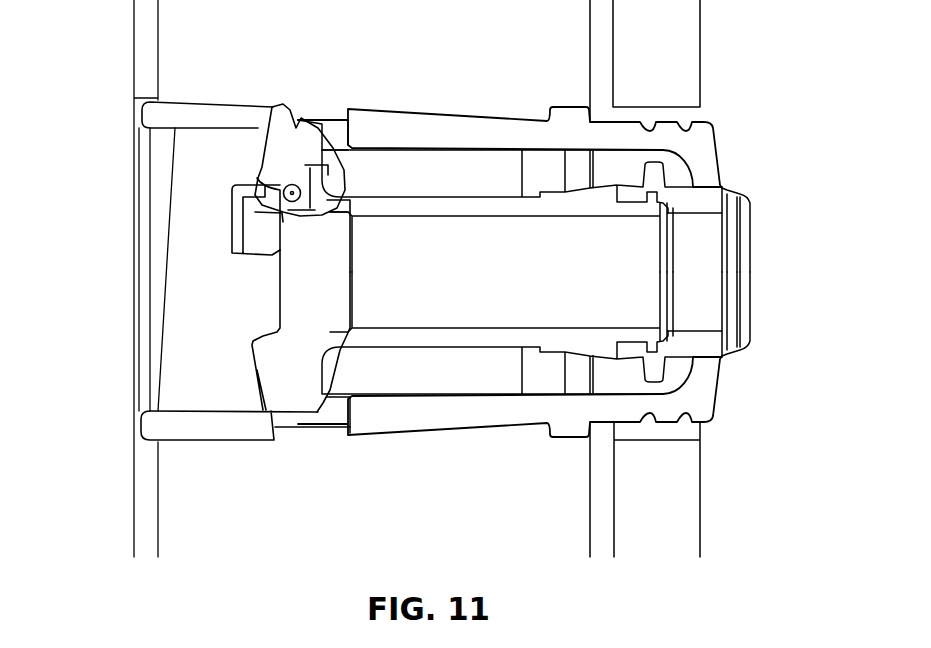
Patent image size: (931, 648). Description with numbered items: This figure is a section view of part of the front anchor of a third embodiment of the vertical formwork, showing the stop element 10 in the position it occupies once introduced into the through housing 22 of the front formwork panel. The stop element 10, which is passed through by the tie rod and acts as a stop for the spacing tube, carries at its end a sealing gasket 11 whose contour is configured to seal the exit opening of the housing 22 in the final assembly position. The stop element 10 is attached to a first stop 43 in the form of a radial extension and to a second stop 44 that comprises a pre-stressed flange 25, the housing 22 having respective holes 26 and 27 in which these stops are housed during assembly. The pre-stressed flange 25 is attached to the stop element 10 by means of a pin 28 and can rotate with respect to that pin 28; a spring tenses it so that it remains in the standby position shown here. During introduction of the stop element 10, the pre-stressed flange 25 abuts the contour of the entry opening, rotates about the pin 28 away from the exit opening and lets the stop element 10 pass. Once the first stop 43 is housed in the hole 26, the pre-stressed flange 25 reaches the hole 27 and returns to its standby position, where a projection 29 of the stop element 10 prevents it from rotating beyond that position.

The stop element 10 is at (547, 338).
The sealing gasket 11 is at (693, 203).
The through housing 22 is at (428, 128).
The pre-stressed flange 25 is at (290, 145).
The hole 26 is at (330, 417).
The hole 27 is at (333, 127).
The pin 28 is at (268, 183).
The projection 29 is at (327, 185).
The first stop 43 is at (257, 370).
The second stop 44 is at (258, 150).